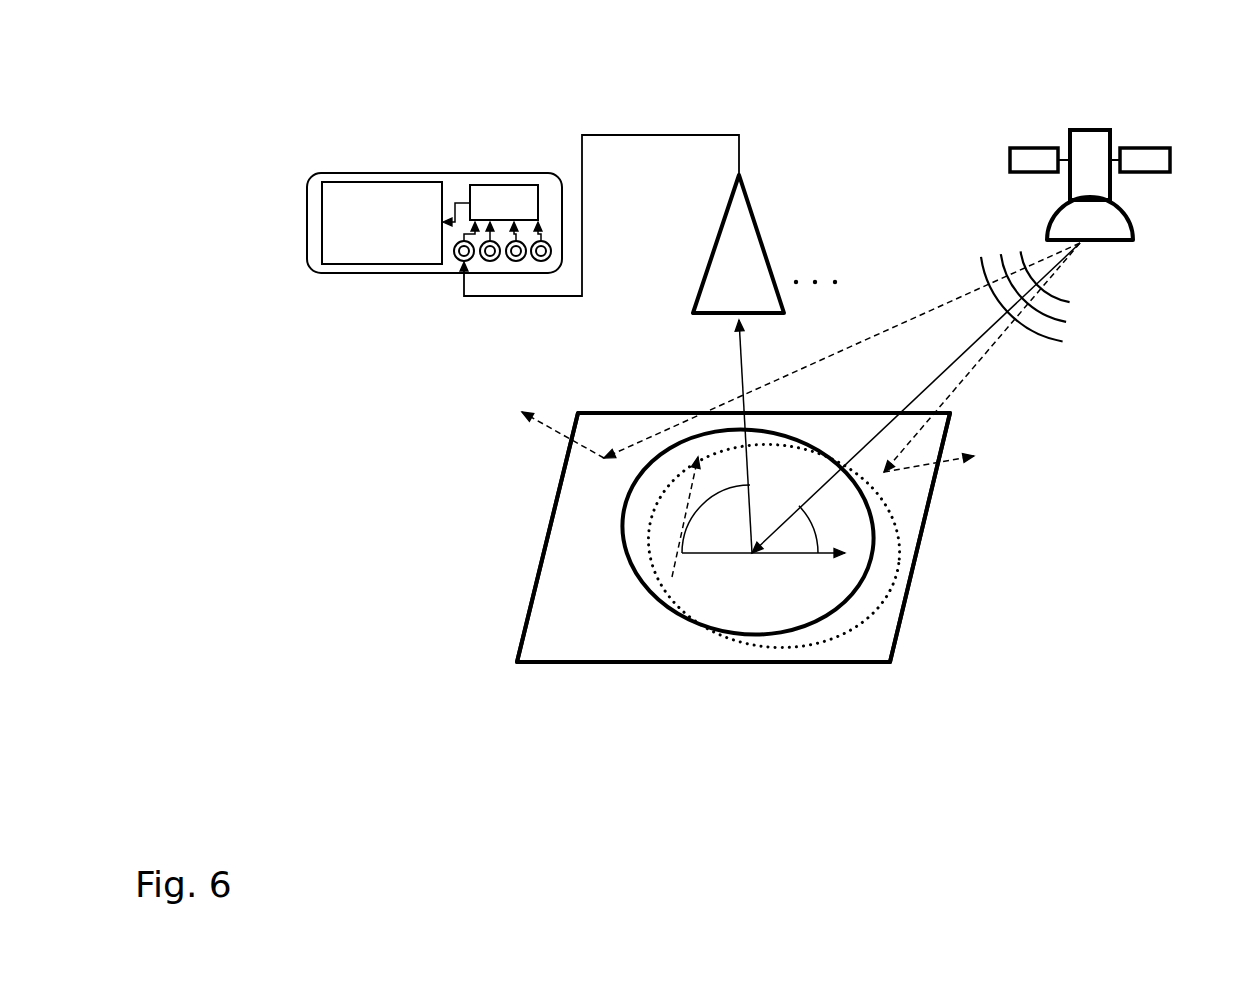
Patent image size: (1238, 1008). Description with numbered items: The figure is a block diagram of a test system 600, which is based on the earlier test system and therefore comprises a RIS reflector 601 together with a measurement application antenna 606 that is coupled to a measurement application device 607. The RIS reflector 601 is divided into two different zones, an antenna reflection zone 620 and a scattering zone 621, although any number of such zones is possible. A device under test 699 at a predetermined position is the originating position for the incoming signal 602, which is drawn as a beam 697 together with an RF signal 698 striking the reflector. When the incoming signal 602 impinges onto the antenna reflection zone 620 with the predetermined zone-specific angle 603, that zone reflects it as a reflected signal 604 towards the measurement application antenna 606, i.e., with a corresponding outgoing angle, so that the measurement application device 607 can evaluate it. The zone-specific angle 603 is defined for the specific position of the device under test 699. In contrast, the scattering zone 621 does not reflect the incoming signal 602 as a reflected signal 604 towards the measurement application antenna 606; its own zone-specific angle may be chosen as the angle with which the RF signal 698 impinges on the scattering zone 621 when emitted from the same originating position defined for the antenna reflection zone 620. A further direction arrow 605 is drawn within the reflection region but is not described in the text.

The test system 600 is at (339, 752).
The RIS reflector 601 is at (550, 528).
The incoming signal 602 is at (905, 411).
The zone-specific angle 603 is at (810, 522).
The reflected signal 604 is at (736, 372).
The direction arrow 605 is at (708, 512).
The measurement application antenna 606 is at (745, 190).
The measurement application device 607 is at (428, 173).
The antenna reflection zone 620 is at (822, 590).
The scattering zone 621 is at (590, 470).
The beam 697 is at (897, 590).
The RF signal 698 is at (992, 248).
The device under test 699 is at (1075, 128).